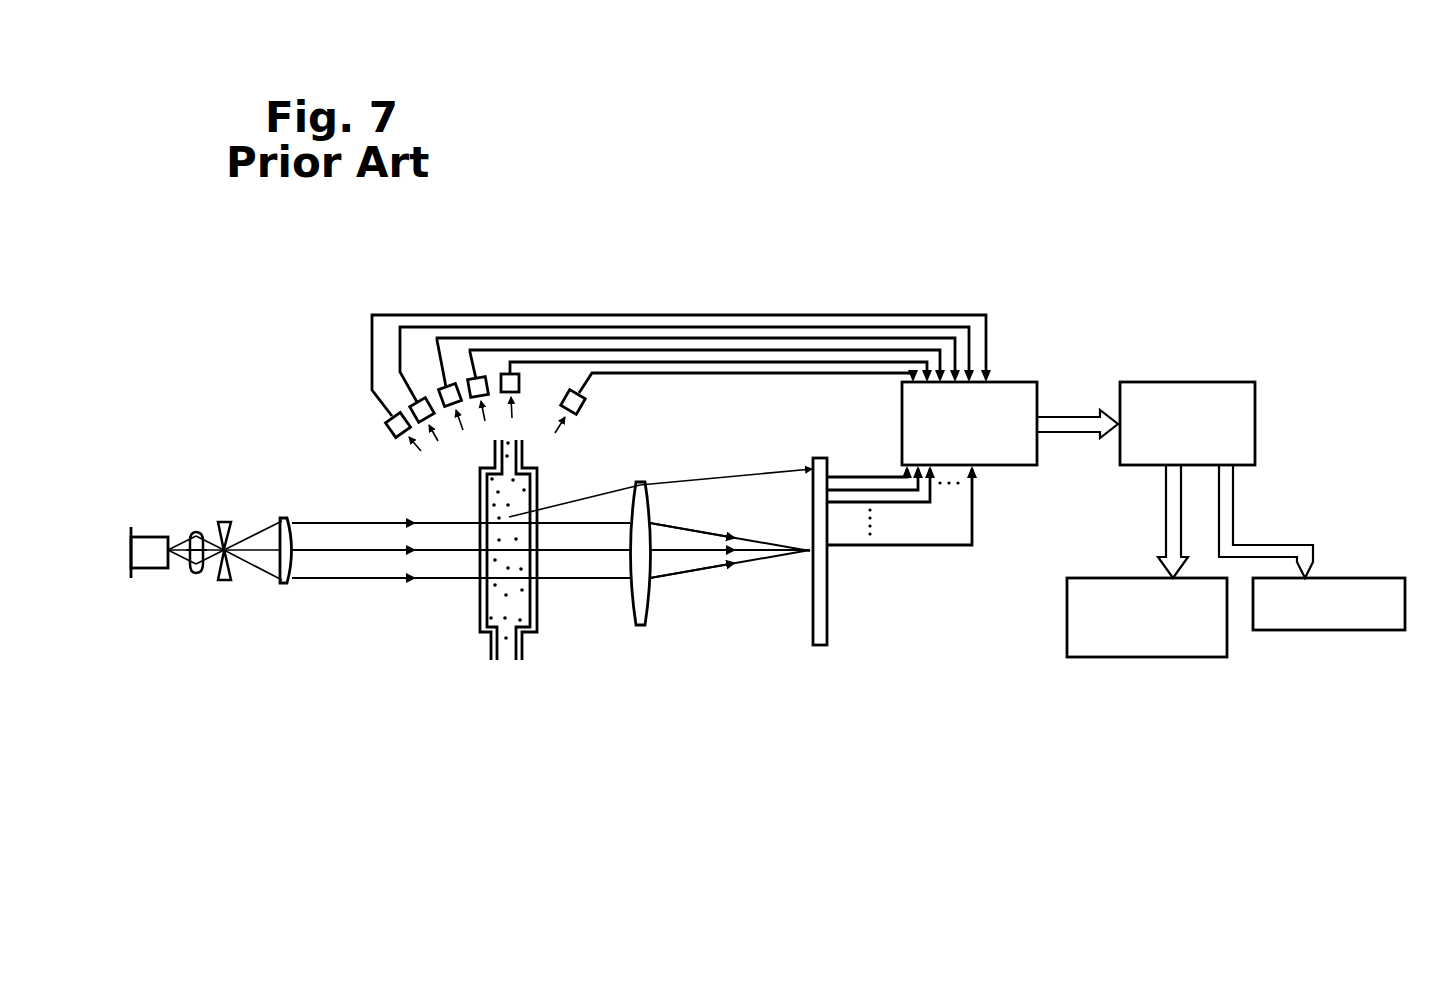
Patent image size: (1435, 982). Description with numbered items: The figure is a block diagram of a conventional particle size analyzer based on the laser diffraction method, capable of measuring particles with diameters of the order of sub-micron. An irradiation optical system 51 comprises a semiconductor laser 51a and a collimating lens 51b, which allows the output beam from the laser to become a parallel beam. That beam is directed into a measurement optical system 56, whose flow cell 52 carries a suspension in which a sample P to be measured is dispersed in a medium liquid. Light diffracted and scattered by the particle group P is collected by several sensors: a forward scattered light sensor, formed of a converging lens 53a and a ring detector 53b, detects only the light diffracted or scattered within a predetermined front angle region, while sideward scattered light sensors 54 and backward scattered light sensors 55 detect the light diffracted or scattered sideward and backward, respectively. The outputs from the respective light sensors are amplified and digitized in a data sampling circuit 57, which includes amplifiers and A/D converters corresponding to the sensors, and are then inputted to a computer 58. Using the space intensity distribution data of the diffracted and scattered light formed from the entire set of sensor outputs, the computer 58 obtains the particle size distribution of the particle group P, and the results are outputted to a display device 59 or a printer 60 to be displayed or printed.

The irradiation optical system 51 is at (223, 570).
The semiconductor laser 51a is at (150, 537).
The collimating lens 51b is at (286, 523).
The flow cell 52 is at (478, 625).
The sample P is at (505, 616).
The converging lens 53a is at (641, 630).
The ring detector 53b is at (816, 648).
The sideward scattered light sensor 54 is at (516, 385).
The backward scattered light sensors 55 is at (456, 389).
The measurement optical system 56 is at (622, 283).
The data sampling circuit 57 is at (1028, 386).
The computer 58 is at (1220, 388).
The display device 59 is at (1147, 617).
The printer 60 is at (1329, 604).